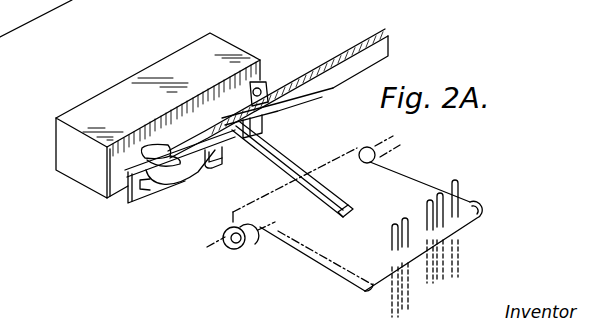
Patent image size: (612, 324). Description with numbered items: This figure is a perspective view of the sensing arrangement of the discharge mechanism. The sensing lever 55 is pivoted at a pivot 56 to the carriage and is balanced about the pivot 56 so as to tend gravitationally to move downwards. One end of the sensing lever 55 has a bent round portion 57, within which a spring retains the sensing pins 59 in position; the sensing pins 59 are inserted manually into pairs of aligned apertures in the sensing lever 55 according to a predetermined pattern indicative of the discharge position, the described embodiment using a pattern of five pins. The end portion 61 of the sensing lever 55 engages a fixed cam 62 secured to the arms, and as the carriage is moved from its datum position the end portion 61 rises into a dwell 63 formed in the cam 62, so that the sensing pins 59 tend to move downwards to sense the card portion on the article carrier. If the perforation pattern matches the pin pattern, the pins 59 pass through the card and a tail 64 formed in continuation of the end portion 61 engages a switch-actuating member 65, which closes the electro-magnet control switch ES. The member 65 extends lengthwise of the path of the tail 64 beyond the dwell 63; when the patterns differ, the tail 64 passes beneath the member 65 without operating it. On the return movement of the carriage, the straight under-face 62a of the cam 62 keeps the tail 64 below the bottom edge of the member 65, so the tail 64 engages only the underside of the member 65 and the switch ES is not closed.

The electro-magnet control switch ES is at (155, 67).
The sensing lever 55 is at (396, 191).
The pivot 56 is at (229, 243).
The bent round portion 57 is at (482, 210).
The sensing pins 59 is at (457, 188).
The end portion of sensing lever 61 is at (268, 153).
The fixed cam 62 is at (332, 75).
The straight under-face of cam 62a is at (161, 190).
The dwell 63 is at (283, 100).
The tail 64 is at (208, 165).
The switch-actuating member 65 is at (197, 170).